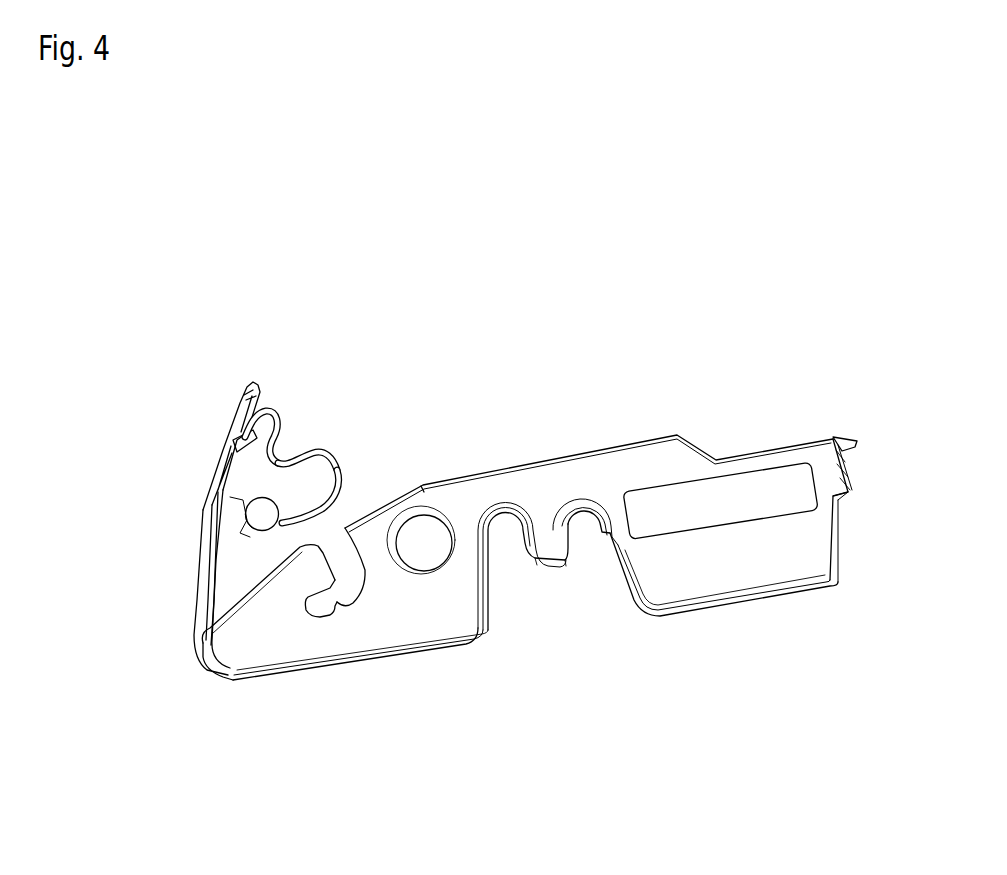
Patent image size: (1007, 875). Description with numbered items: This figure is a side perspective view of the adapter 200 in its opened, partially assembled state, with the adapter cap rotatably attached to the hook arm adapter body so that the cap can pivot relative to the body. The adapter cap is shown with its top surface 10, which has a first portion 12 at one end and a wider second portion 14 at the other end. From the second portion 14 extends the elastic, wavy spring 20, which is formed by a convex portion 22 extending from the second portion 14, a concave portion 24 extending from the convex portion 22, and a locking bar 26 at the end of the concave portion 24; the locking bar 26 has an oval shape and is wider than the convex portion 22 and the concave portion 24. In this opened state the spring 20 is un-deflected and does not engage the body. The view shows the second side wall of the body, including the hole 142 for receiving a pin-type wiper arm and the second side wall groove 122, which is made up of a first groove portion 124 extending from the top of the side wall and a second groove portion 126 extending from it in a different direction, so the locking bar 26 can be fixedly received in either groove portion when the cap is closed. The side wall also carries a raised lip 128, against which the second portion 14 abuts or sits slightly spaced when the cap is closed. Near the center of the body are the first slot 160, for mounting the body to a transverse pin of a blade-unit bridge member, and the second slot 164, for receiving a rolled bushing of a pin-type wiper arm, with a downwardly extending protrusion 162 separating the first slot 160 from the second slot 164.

The top surface 10 is at (200, 507).
The first portion 12 is at (197, 580).
The second portion 14 is at (217, 433).
The spring 20 is at (310, 453).
The convex portion 22 is at (280, 444).
The concave portion 24 is at (350, 476).
The locking bar 26 is at (263, 515).
The second side wall groove 122 is at (280, 803).
The first groove portion 124 is at (333, 550).
The second groove portion 126 is at (335, 606).
The lip 128 is at (430, 483).
The hole 142 is at (424, 553).
The first slot 160 is at (503, 533).
The protrusion 162 is at (545, 567).
The second slot 164 is at (583, 520).
The adapter 200 is at (575, 302).